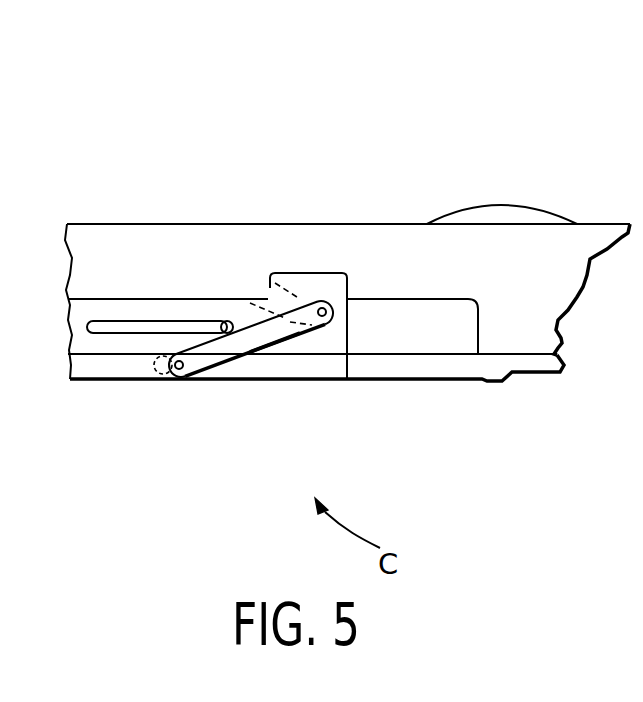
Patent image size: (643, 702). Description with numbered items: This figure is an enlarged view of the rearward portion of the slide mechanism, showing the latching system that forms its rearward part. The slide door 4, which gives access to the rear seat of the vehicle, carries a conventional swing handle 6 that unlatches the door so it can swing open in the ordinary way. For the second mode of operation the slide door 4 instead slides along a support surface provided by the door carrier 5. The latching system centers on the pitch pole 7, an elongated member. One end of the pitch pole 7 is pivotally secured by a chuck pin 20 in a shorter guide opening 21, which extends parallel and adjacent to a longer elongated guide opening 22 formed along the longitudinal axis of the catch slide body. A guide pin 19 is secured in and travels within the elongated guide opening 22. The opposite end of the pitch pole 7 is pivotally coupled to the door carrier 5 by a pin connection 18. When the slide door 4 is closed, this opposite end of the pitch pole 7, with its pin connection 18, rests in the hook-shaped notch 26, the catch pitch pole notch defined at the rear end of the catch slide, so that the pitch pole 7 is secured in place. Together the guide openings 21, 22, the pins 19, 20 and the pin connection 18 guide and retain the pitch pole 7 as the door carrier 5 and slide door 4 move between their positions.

The slide door 4 is at (130, 224).
The door carrier 5 is at (397, 298).
The swing handle 6 is at (490, 205).
The pitch pole 7 is at (277, 343).
The pin connection 18 is at (328, 322).
The guide pin 19 is at (250, 356).
The chuck pin 20 is at (178, 380).
The guide opening 21 is at (155, 380).
The guide opening 22 is at (162, 318).
The hook-shaped notch 26 is at (313, 305).